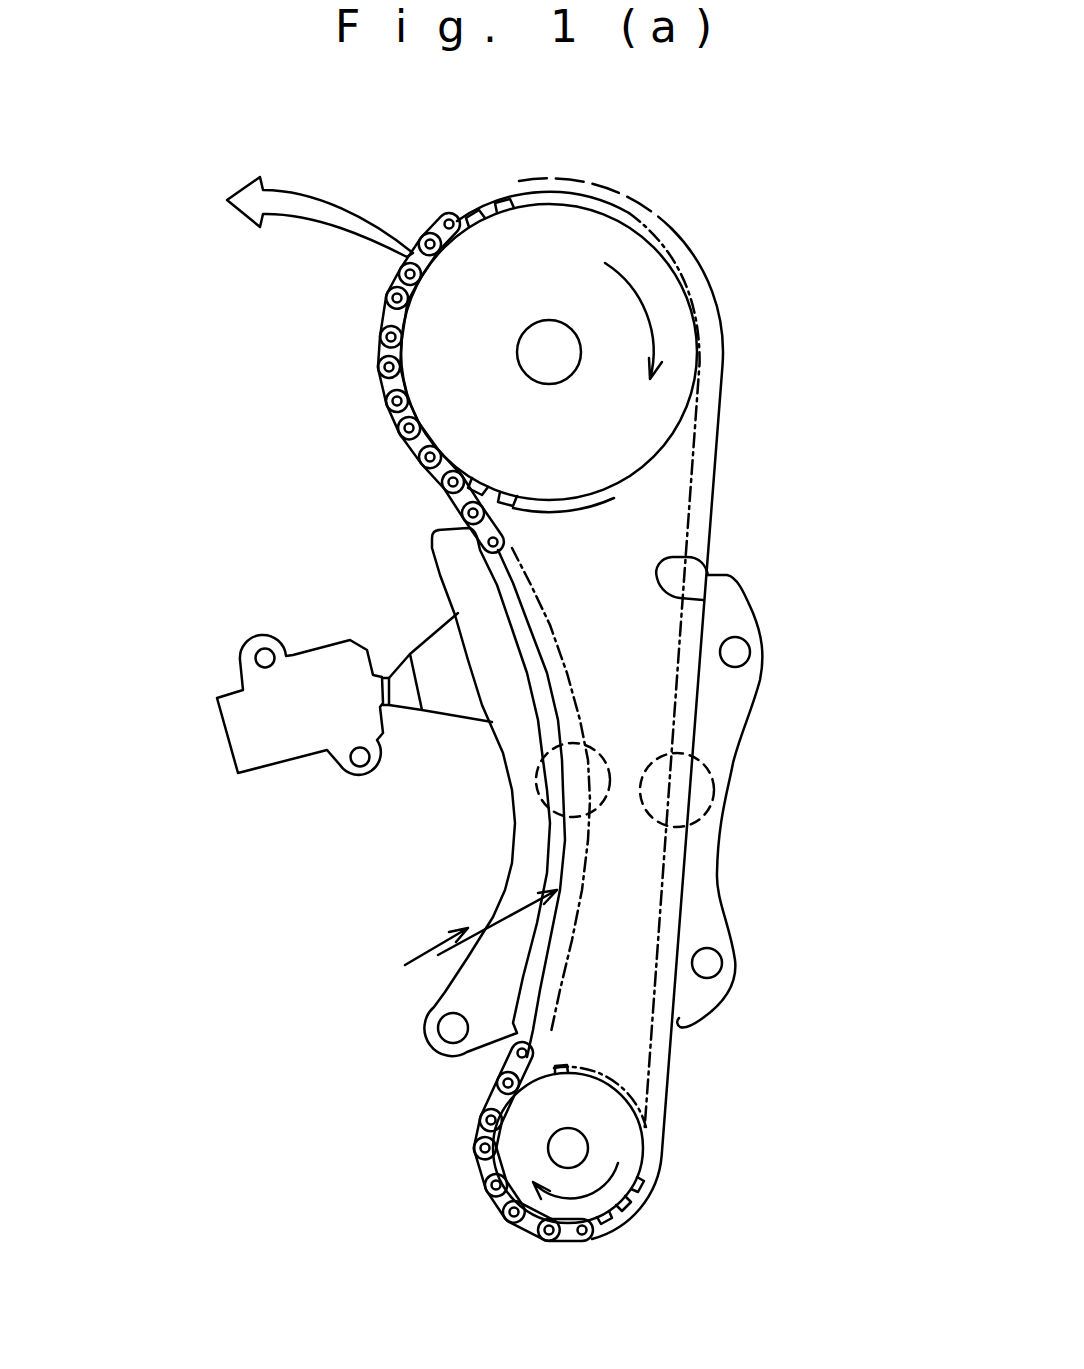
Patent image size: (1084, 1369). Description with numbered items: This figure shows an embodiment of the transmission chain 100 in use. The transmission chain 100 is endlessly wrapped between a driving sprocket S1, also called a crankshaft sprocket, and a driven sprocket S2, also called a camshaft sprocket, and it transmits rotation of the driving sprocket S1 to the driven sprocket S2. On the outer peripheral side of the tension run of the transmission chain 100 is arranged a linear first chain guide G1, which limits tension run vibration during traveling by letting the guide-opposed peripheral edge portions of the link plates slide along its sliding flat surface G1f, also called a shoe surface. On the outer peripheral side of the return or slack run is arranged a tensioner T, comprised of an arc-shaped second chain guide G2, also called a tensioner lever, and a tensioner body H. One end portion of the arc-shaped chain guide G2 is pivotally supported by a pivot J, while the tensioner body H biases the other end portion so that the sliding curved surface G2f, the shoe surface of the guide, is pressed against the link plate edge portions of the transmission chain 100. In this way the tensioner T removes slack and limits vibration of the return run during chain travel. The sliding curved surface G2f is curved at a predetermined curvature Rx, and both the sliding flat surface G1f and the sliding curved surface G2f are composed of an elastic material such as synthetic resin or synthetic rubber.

The driven sprocket S2 is at (577, 243).
The driving sprocket S1 is at (622, 1168).
The transmission chain 100 is at (365, 397).
The first chain guide G1 is at (737, 693).
The sliding flat surface G1f is at (683, 558).
The second chain guide G2 is at (520, 770).
The sliding curved surface G2f is at (513, 618).
The pivot J is at (438, 1048).
The tensioner T is at (408, 617).
The tensioner body H is at (250, 697).
The predetermined curvature Rx is at (458, 940).